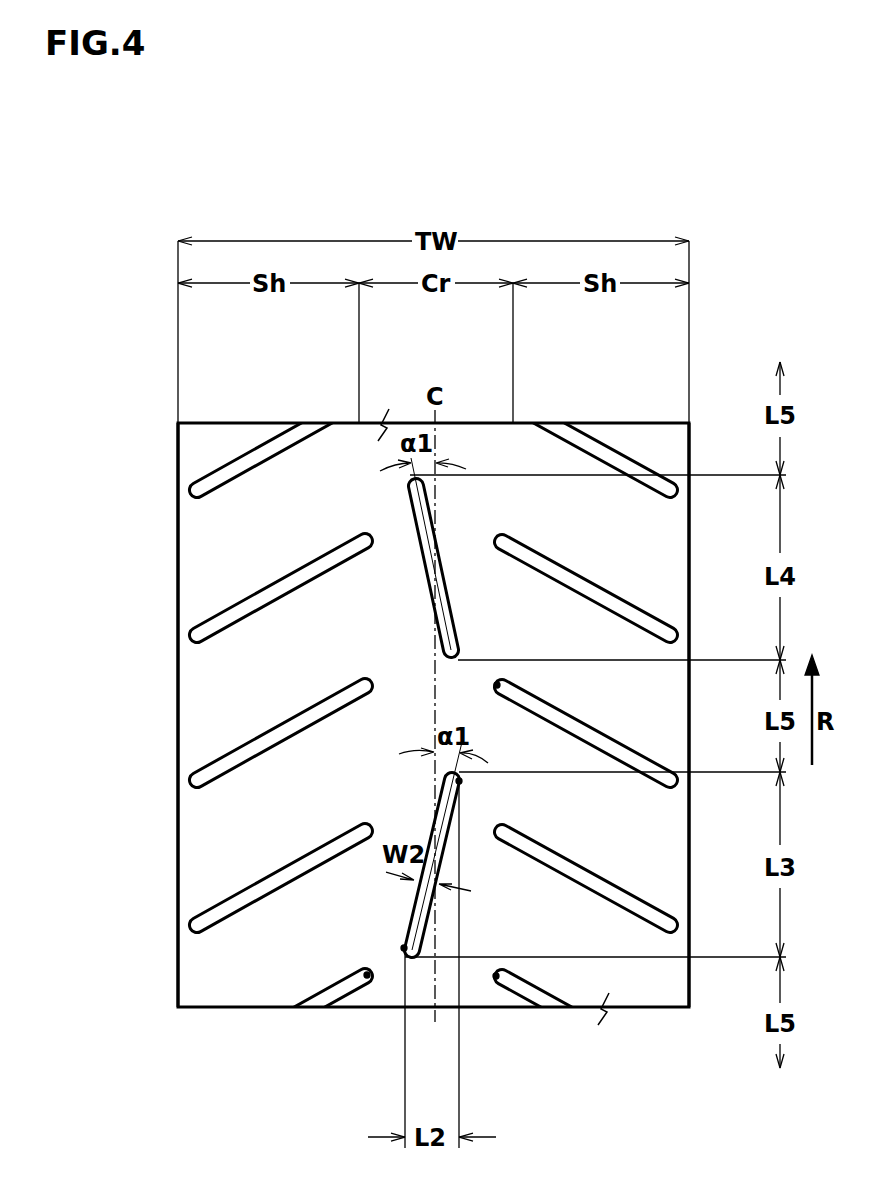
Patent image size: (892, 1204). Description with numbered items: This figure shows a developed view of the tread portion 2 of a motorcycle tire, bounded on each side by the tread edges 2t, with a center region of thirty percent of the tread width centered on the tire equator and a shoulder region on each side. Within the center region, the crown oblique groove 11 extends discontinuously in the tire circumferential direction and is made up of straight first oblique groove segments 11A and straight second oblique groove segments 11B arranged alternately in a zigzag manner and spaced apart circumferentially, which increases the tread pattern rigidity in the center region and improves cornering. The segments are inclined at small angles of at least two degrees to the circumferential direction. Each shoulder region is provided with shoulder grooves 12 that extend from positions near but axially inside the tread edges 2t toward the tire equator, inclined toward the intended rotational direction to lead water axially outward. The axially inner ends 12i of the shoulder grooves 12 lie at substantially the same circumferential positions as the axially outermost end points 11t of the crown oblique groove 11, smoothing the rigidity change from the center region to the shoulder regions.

The tread portion 2 is at (618, 437).
The tread edges 2t is at (177, 433).
The crown oblique groove 11 is at (256, 718).
The first oblique groove segments 11A is at (412, 922).
The second oblique groove segments 11B is at (415, 518).
The shoulder grooves 12 is at (222, 476).
The axially inner ends of the shoulder grooves 12i is at (367, 975).
The axially outermost end points of the crown oblique groove 11t is at (460, 781).